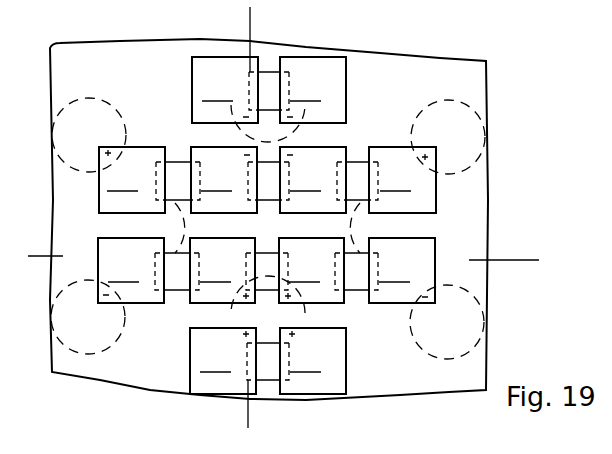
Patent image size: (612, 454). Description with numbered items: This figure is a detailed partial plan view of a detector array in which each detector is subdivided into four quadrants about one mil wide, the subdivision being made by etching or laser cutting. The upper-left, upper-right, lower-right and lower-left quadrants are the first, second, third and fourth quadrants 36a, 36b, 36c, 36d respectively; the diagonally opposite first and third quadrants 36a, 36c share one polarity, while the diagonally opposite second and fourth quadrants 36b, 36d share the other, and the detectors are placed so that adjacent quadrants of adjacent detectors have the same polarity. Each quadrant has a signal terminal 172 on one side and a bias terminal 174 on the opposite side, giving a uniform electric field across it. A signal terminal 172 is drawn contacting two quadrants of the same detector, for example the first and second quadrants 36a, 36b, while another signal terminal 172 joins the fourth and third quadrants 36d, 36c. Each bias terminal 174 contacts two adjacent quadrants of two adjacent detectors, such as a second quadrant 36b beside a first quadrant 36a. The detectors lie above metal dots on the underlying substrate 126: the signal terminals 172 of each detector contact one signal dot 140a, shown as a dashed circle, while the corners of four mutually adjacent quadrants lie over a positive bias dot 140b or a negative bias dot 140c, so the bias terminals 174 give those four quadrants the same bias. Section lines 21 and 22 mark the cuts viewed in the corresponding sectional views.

The section line 21- 21 is at (249, 425).
The section line 22- 22 is at (523, 261).
The first quadrant 36a is at (222, 270).
The second quadrant 36b is at (313, 270).
The third quadrant 36c is at (312, 180).
The fourth quadrant 36d is at (222, 180).
The substrate / board 126 is at (85, 370).
The signal dot 140a is at (143, 235).
The positive bias dot 140b is at (122, 114).
The negative bias dot 140c is at (280, 136).
The signal terminal 172 is at (181, 160).
The bias terminal 174 is at (272, 200).